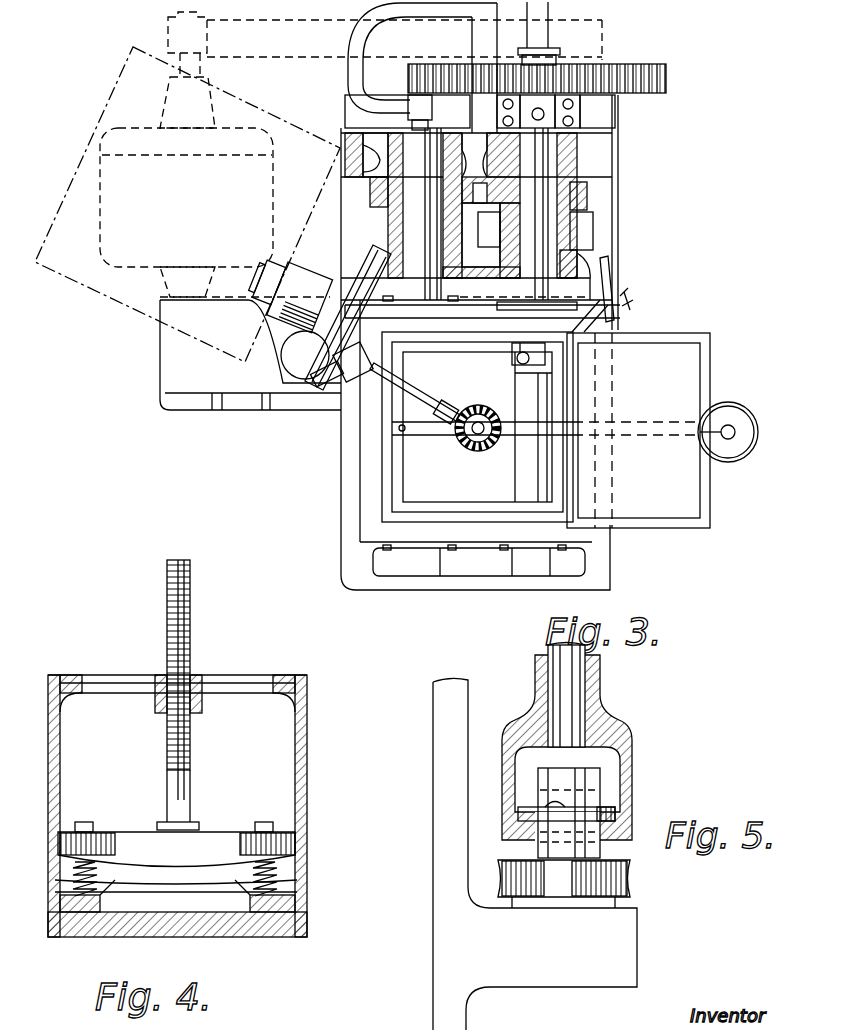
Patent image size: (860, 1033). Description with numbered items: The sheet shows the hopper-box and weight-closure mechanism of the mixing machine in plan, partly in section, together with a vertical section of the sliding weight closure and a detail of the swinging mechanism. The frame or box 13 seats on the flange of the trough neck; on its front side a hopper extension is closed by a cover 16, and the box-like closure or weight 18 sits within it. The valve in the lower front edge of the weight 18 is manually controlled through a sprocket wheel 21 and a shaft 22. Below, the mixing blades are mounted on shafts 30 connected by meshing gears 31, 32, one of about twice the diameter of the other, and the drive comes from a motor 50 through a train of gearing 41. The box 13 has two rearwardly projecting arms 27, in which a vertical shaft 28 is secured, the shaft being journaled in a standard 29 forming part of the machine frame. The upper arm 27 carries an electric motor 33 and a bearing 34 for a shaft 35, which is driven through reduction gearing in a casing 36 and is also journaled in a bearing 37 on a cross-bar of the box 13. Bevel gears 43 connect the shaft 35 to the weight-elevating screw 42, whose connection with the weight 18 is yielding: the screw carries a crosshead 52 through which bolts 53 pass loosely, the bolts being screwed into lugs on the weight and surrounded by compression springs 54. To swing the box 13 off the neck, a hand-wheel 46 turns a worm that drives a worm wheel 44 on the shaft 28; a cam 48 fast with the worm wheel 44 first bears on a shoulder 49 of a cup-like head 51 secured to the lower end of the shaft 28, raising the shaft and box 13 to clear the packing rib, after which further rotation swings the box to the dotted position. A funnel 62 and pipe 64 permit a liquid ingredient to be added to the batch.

In FIG. 4, the frame or box 13 is at (306, 812).
In FIG. 3, the cover 16 is at (692, 342).
In FIG. 3, the box-like closure or weight 18 is at (477, 427).
In FIG. 3, the sprocket wheel 21 is at (632, 305).
In FIG. 3, the shaft 22 is at (575, 316).
In FIG. 3, the rearwardly projecting arms or brackets 27 is at (482, 318).
In FIG. 3, the vertical shaft 28 is at (295, 360).
In FIG. 5, the vertical shaft 28 is at (560, 690).
In FIG. 3, the standard 29 is at (250, 355).
In FIG. 5, the standard 29 is at (455, 828).
In FIG. 3, the shafts 30 is at (477, 214).
In FIG. 3, the meshing gear 31 is at (580, 158).
In FIG. 3, the meshing gear 32 is at (345, 145).
In FIG. 3, the electric motor 33 is at (303, 282).
In FIG. 3, the bearing 34 is at (341, 361).
In FIG. 3, the shaft 35 is at (412, 396).
In FIG. 3, the casing 36 is at (372, 255).
In FIG. 3, the bearing 37 is at (450, 402).
In FIG. 3, the train of gearing 41 is at (632, 75).
In FIG. 3, the weight-elevating screw 42 is at (478, 436).
In FIG. 4, the weight-elevating screw 42 is at (192, 624).
In FIG. 3, the bevel gears 43 is at (487, 408).
In FIG. 5, the worm wheel 44 is at (630, 882).
In FIG. 3, the hand-wheel 46 is at (614, 268).
In FIG. 5, the cam 48 is at (565, 812).
In FIG. 5, the shoulder 49 is at (612, 786).
In FIG. 3, the motor 50 is at (351, 154).
In FIG. 5, the cup-like head 51 is at (620, 724).
In FIG. 4, the crosshead 52 is at (222, 836).
In FIG. 4, the bolts 53 is at (85, 822).
In FIG. 4, the compression springs 54 is at (176, 879).
In FIG. 3, the funnel 62 is at (735, 408).
In FIG. 3, the pipe 64 is at (672, 426).